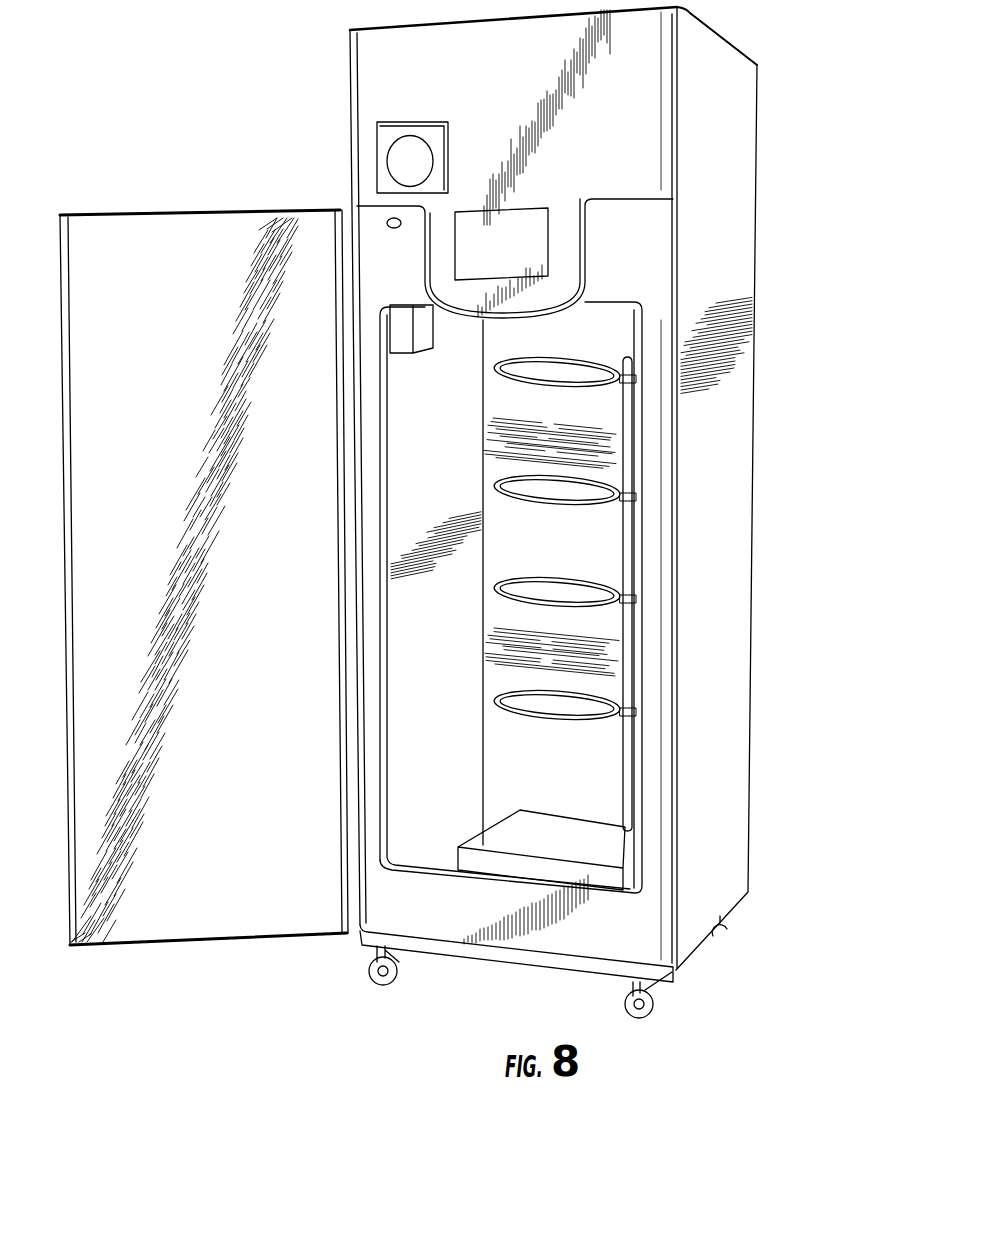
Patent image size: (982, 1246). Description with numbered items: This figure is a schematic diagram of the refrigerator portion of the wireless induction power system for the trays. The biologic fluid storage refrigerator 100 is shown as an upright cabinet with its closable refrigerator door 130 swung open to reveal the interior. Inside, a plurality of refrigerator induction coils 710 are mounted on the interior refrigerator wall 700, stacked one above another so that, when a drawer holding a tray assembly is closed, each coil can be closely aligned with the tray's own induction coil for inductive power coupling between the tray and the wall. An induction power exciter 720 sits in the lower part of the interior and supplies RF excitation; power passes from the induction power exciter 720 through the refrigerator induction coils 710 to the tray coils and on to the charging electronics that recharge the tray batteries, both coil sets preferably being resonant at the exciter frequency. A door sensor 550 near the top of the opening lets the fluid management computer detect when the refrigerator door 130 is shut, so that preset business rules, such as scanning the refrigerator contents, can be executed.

The biologic fluid storage refrigerator 100 is at (757, 118).
The refrigerator door 130 is at (183, 212).
The door sensor 550 is at (403, 322).
The interior refrigerator wall 700 is at (663, 534).
The refrigerator induction coils 710 is at (634, 712).
The induction power exciter 720 is at (598, 842).